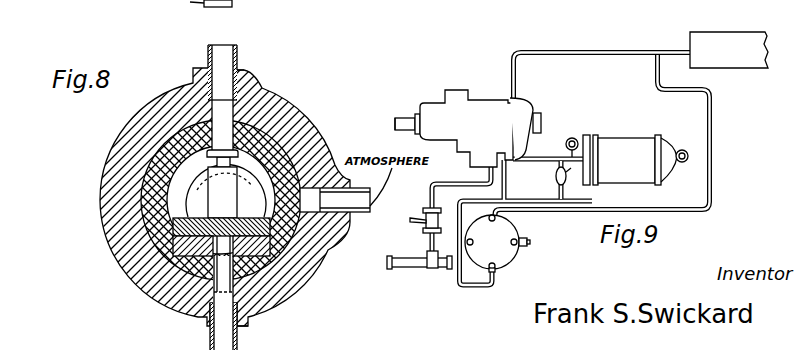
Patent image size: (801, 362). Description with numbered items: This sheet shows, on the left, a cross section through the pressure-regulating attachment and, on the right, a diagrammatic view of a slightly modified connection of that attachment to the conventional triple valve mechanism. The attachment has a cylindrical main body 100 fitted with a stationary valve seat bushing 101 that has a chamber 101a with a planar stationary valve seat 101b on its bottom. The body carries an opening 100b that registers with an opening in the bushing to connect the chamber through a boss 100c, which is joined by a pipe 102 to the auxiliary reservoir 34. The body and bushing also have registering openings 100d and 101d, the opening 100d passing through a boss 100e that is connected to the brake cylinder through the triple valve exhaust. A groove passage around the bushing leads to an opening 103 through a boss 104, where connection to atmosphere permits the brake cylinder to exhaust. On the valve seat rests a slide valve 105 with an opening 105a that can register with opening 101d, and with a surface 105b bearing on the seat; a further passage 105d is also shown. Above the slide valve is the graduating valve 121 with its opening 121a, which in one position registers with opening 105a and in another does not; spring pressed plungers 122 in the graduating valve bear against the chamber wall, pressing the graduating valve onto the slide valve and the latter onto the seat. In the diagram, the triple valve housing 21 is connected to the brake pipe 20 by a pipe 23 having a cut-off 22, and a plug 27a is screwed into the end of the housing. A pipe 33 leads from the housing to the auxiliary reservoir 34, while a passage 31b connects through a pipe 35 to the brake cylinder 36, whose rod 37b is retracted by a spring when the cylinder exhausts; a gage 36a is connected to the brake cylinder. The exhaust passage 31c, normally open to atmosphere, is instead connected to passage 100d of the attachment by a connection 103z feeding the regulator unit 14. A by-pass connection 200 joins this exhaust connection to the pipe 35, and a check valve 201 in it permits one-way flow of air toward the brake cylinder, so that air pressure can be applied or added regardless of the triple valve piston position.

In FIG. 8, the main body 100 is at (253, 94).
In FIG. 8, the opening 100b is at (218, 53).
In FIG. 8, the boss 100c is at (238, 72).
In FIG. 8, the opening 100d is at (236, 347).
In FIG. 9, the opening 100d is at (497, 275).
In FIG. 8, the boss 100e is at (250, 331).
In FIG. 8, the bushing 101 is at (252, 138).
In FIG. 8, the chamber 101a is at (180, 194).
In FIG. 8, the stationary valve seat 101b is at (196, 312).
In FIG. 8, the opening 101d is at (195, 265).
In FIG. 8, the opening 103 is at (330, 210).
In FIG. 9, the opening 103 is at (531, 242).
In FIG. 8, the boss 104 is at (343, 218).
In FIG. 8, the slide valve 105 is at (183, 248).
In FIG. 8, the opening 105a is at (212, 250).
In FIG. 8, the surface 105b is at (262, 258).
In FIG. 8, the passage to atmosphere 105d is at (282, 168).
In FIG. 8, the graduating valve 121 is at (175, 226).
In FIG. 8, the opening 121a is at (206, 158).
In FIG. 8, the spring pressed plungers 122 is at (205, 150).
In FIG. 9, the regulator valve unit 14 is at (504, 232).
In FIG. 9, the brake pipe 20 is at (395, 265).
In FIG. 9, the triple valve housing 21 is at (476, 100).
In FIG. 9, the cut-off 22 is at (423, 217).
In FIG. 9, the pipe 23 is at (447, 190).
In FIG. 9, the plug 27a is at (407, 117).
In FIG. 9, the passage 31b is at (527, 110).
In FIG. 9, the passage 31c is at (507, 157).
In FIG. 9, the pipe 33 is at (700, 91).
In FIG. 9, the auxiliary reservoir 34 is at (750, 43).
In FIG. 9, the pipe 35 is at (540, 159).
In FIG. 9, the brake cylinder 36 is at (640, 138).
In FIG. 9, the gage 36a is at (573, 138).
In FIG. 9, the rod 37b is at (677, 150).
In FIG. 9, the pipe 102 is at (550, 50).
In FIG. 9, the pipe elbow 103z is at (485, 288).
In FIG. 9, the by-pass connection 200 is at (541, 222).
In FIG. 9, the check valve 201 is at (556, 178).